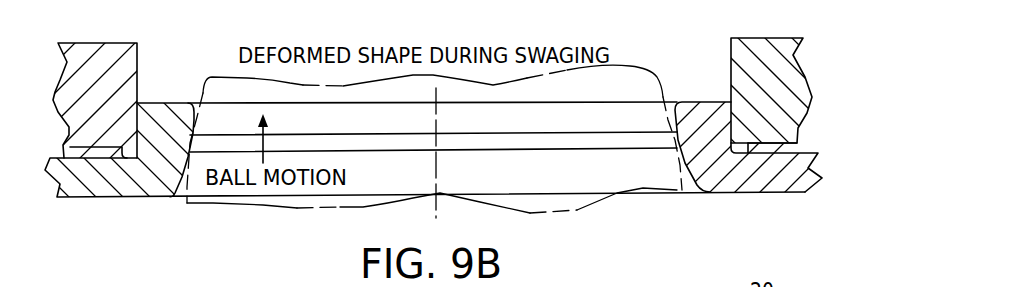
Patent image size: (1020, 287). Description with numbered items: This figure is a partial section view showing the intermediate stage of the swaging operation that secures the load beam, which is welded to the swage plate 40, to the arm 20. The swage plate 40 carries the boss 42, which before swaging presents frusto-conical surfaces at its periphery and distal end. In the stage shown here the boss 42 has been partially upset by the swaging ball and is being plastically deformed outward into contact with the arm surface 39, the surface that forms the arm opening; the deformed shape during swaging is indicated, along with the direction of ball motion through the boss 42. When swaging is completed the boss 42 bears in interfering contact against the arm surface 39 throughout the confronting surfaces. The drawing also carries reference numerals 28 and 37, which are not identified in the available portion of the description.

The arm 20 is at (755, 38).
The swage plate 28 is at (801, 147).
The swage ball 37 is at (606, 203).
The arm surface 39 is at (137, 72).
The swage plate 40 is at (777, 193).
The boss 42 is at (714, 101).